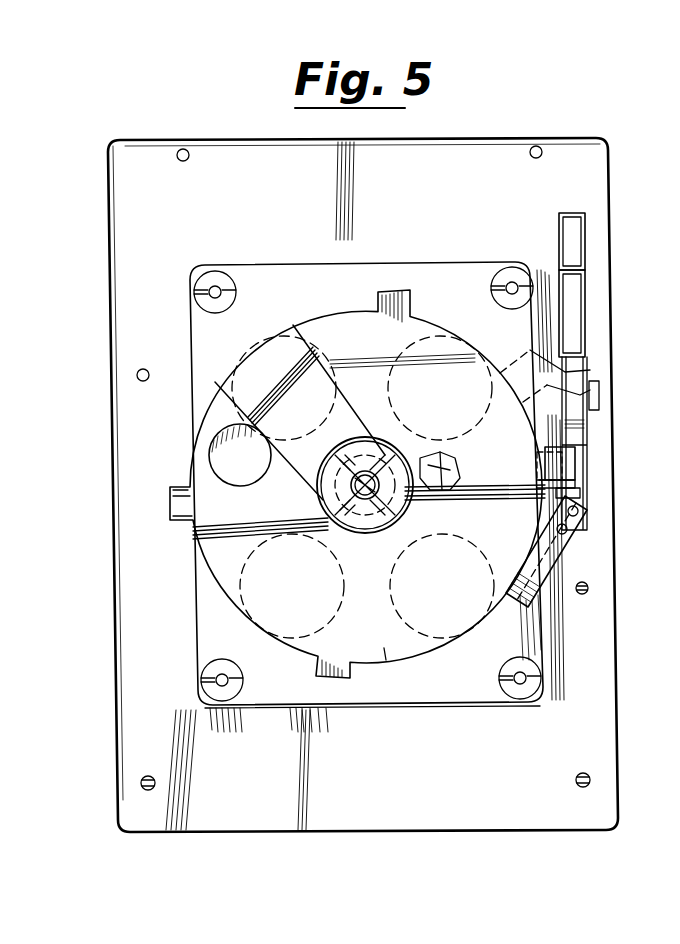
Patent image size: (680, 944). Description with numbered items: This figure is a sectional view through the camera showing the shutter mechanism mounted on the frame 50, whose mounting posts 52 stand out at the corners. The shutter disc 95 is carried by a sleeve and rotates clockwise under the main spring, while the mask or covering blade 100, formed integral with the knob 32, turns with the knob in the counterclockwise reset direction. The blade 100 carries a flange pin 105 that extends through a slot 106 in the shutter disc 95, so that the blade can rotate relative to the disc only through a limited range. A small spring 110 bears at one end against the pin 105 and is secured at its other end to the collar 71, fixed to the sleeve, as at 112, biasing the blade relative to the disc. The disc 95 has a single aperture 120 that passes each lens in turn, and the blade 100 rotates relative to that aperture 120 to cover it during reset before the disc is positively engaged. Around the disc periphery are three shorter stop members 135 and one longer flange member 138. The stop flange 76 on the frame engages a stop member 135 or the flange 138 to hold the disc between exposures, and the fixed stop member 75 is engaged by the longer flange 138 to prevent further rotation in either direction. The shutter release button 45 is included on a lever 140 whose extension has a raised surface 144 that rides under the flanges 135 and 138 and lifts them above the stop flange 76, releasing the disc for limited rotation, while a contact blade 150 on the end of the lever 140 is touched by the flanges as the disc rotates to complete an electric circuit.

The frame 50 is at (483, 192).
The mounting posts 52 is at (200, 280).
The shutter release button 45 is at (577, 280).
The lever 140 is at (590, 295).
The stop member 75 is at (565, 380).
The raised surface 144 is at (550, 463).
The longer flange member 138 is at (575, 462).
The stop flange 76 is at (556, 495).
The contact blade 150 is at (553, 552).
The blade 100 is at (288, 330).
The stop members 135 is at (400, 300).
The spring 110 is at (383, 400).
The flange pin 105 is at (328, 425).
The aperture 120 is at (213, 455).
The slot 106 is at (283, 490).
The collar 71 is at (448, 468).
The securing point 112 is at (440, 493).
The knob 32 is at (350, 525).
The shutter disc 95 is at (388, 655).